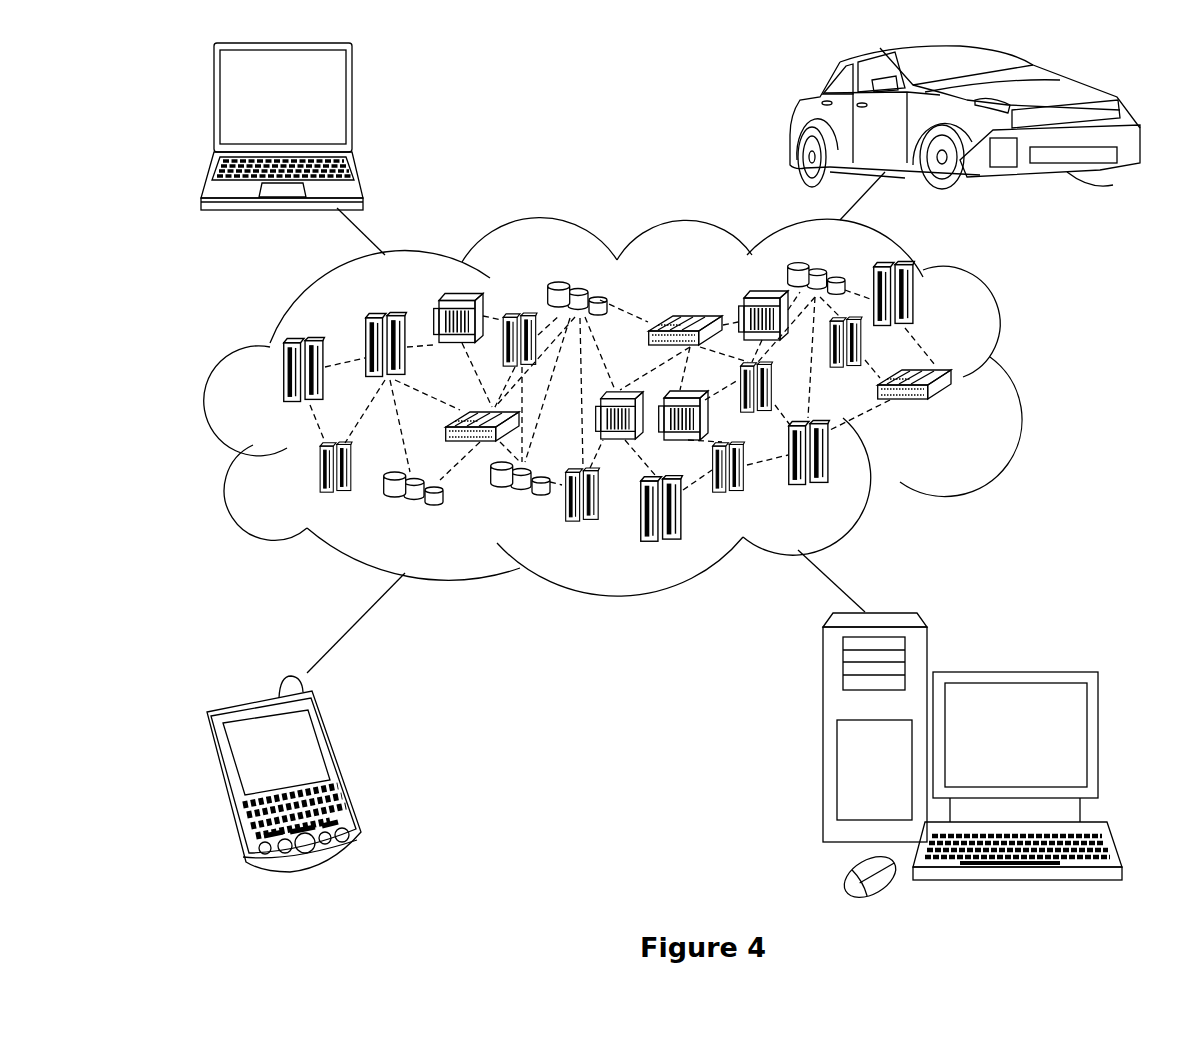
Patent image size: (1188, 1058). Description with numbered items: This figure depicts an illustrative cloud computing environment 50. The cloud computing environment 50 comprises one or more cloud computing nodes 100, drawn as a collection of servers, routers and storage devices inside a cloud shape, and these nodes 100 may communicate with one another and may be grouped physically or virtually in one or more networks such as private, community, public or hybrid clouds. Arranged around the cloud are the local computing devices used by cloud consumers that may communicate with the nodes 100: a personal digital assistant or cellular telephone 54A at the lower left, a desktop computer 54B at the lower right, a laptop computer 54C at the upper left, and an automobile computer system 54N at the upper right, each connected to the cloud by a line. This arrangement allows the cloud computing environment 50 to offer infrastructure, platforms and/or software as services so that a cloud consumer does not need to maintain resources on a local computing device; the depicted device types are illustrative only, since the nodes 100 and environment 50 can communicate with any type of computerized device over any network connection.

The cloud computing environment 50 is at (1012, 380).
The cloud computing nodes 100 is at (958, 413).
The personal digital assistant or cellular telephone 54A is at (342, 767).
The desktop computer 54B is at (1012, 672).
The laptop computer 54C is at (352, 105).
The automobile computer system 54N is at (790, 120).